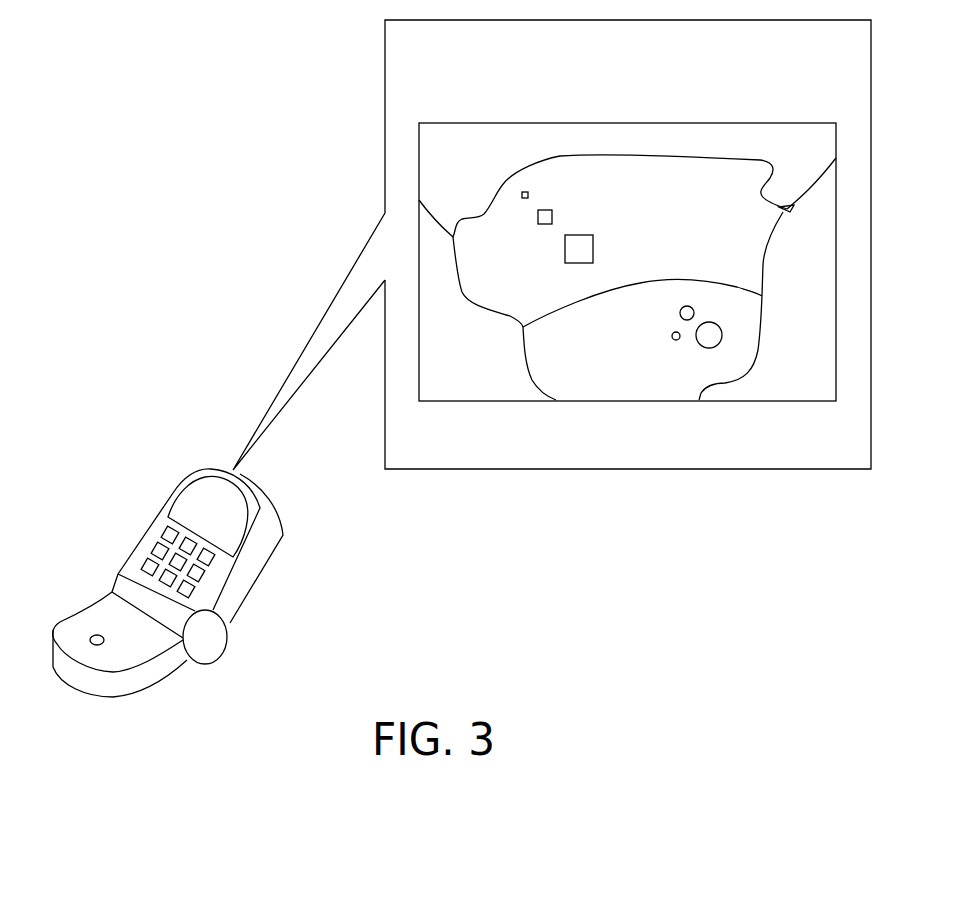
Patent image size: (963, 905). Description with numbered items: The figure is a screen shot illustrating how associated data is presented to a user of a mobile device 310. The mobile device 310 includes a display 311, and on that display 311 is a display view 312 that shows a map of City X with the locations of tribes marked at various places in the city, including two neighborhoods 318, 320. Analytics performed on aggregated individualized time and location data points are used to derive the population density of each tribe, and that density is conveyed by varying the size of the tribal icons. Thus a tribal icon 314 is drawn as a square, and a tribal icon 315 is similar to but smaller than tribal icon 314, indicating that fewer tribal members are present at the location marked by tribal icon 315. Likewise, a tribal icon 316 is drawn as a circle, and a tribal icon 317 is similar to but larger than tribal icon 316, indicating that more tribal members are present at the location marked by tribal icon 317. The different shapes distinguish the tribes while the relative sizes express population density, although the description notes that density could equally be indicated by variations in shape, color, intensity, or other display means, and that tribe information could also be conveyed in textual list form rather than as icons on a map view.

The mobile device 310 is at (123, 573).
The display 311 is at (183, 510).
The display view 312 is at (383, 90).
The tribal icon 314 is at (593, 252).
The tribal icon 315 is at (545, 209).
The tribal icon 316 is at (679, 313).
The tribal icon 317 is at (717, 348).
The neighborhood 318 is at (558, 383).
The neighborhood 320 is at (750, 278).